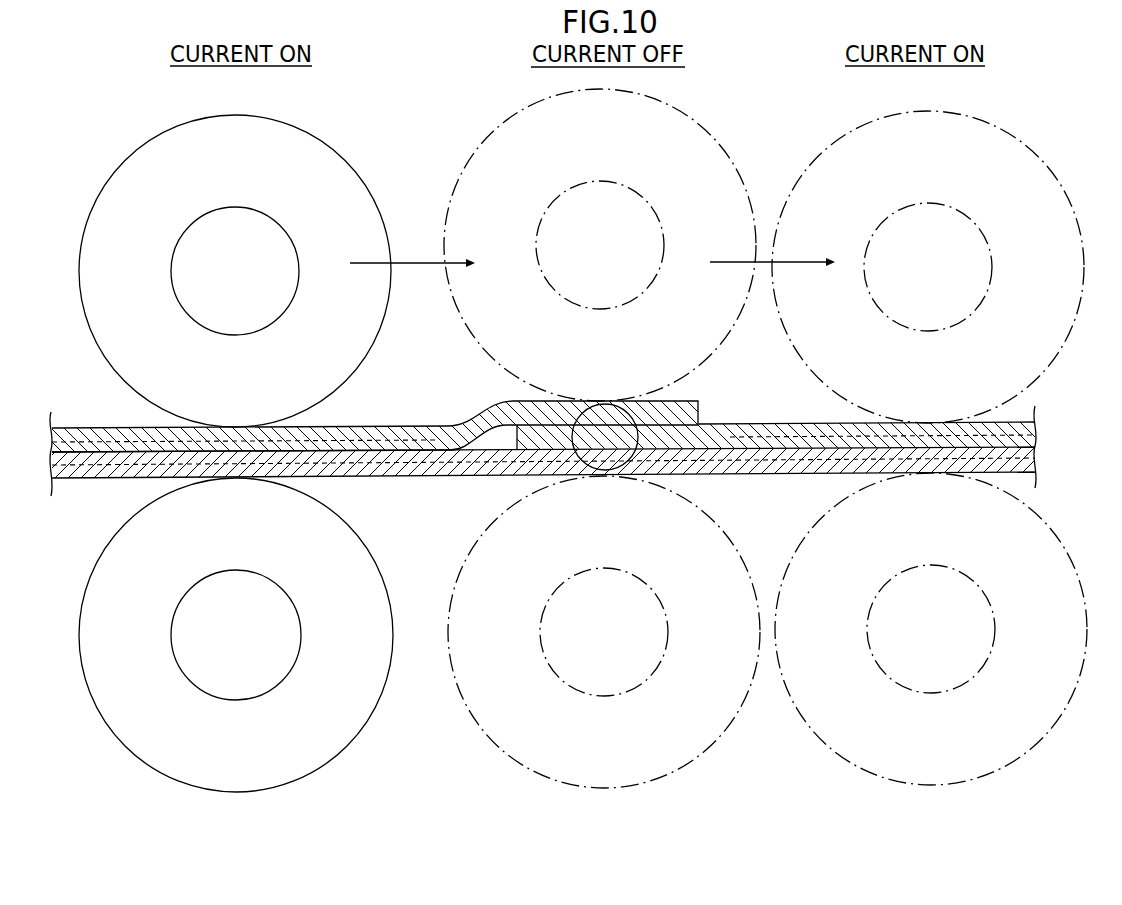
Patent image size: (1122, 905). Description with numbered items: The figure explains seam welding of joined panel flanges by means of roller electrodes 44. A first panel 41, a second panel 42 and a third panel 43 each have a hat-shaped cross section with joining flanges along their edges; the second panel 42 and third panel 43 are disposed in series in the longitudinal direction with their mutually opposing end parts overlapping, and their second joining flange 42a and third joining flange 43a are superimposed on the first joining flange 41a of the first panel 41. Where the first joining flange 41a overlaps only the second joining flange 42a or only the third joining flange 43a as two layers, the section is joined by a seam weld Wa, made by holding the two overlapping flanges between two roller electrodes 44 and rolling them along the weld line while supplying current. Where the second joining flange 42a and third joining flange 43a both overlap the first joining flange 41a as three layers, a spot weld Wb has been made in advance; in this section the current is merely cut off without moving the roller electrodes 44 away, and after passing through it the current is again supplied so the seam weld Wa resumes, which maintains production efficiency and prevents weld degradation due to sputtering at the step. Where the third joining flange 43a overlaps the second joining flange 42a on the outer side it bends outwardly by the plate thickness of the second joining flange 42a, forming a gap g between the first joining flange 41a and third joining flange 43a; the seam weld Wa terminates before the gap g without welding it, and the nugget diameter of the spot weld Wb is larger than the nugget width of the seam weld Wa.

The first panel 41 is at (439, 490).
The first joining flange 41a is at (732, 476).
The second panel 42 is at (787, 406).
The second joining flange 42a is at (815, 430).
The third panel 43 is at (406, 407).
The third joining flange 43a is at (340, 425).
The roller electrode 44 is at (323, 142).
The gap g is at (500, 443).
The seam weld Wa is at (270, 478).
The spot weld Wb is at (602, 403).